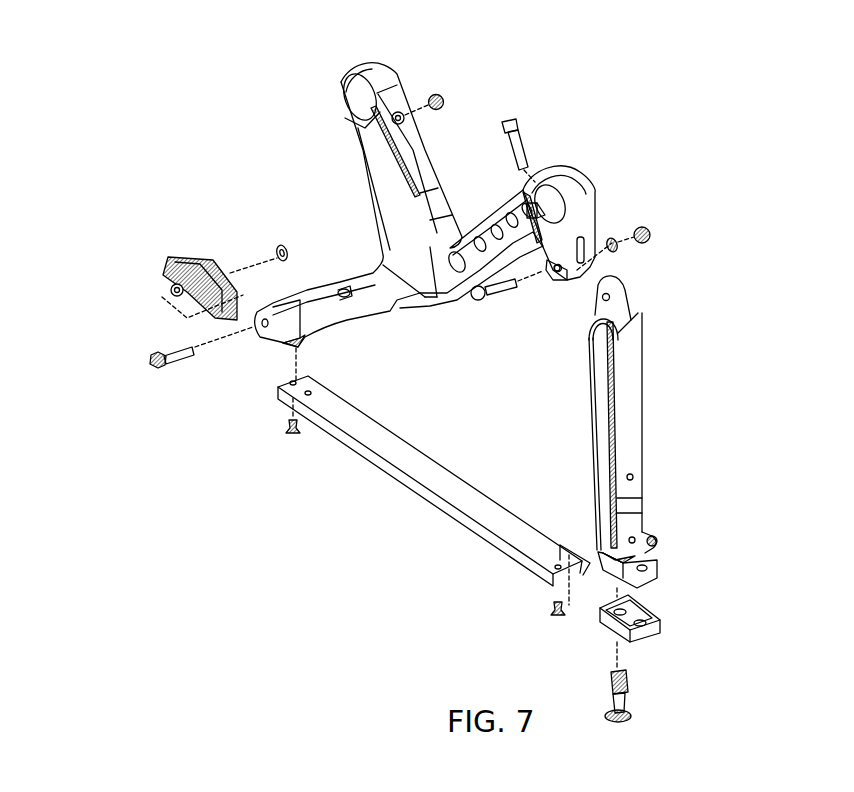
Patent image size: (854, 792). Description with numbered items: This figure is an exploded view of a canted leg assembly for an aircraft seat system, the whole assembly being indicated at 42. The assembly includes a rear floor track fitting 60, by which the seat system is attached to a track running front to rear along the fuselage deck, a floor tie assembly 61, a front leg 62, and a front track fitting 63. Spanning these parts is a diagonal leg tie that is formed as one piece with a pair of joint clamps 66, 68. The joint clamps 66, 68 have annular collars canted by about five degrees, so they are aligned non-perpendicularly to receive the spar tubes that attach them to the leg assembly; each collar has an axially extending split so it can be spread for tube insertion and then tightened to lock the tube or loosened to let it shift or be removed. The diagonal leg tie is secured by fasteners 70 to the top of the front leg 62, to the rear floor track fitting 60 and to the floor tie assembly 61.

The hitch assembly 42 is at (178, 190).
The rear floor track fitting 60 is at (165, 278).
The floor tie assembly 61 is at (383, 452).
The front leg 62 is at (628, 426).
The front track fitting 63 is at (630, 705).
The joint clamp 66 is at (592, 186).
The joint clamp 68 is at (386, 62).
The fasteners 70 is at (447, 100).